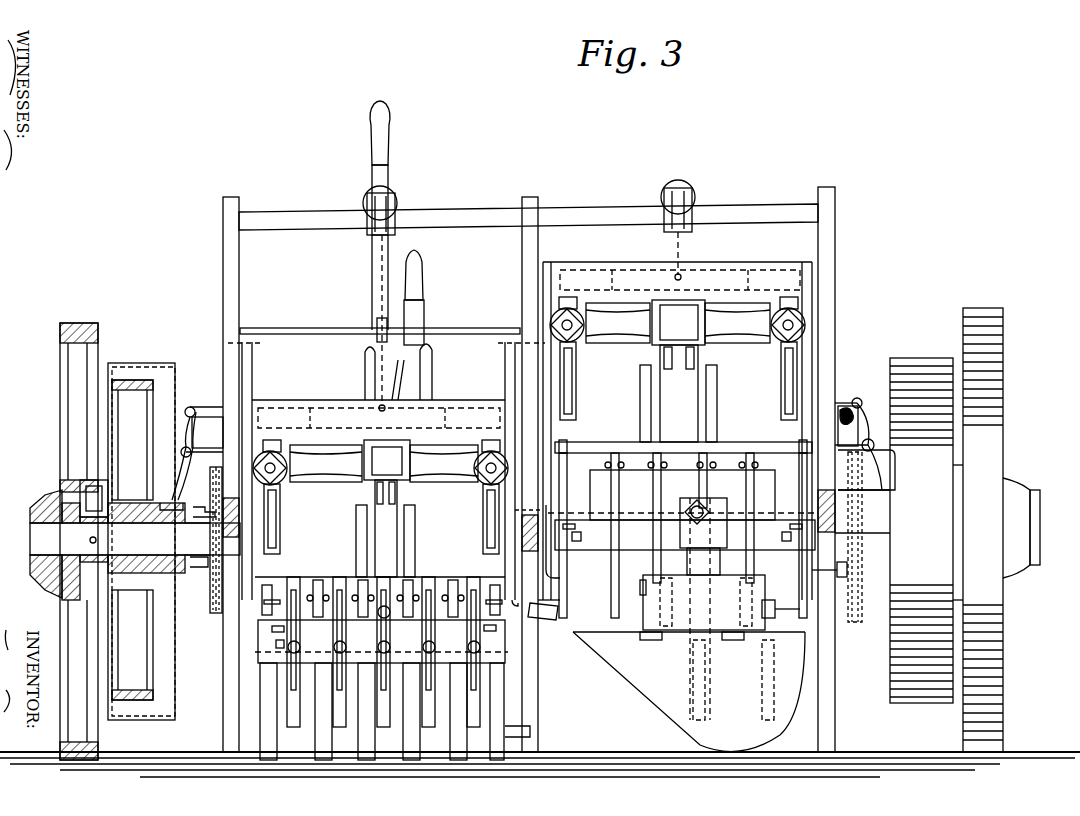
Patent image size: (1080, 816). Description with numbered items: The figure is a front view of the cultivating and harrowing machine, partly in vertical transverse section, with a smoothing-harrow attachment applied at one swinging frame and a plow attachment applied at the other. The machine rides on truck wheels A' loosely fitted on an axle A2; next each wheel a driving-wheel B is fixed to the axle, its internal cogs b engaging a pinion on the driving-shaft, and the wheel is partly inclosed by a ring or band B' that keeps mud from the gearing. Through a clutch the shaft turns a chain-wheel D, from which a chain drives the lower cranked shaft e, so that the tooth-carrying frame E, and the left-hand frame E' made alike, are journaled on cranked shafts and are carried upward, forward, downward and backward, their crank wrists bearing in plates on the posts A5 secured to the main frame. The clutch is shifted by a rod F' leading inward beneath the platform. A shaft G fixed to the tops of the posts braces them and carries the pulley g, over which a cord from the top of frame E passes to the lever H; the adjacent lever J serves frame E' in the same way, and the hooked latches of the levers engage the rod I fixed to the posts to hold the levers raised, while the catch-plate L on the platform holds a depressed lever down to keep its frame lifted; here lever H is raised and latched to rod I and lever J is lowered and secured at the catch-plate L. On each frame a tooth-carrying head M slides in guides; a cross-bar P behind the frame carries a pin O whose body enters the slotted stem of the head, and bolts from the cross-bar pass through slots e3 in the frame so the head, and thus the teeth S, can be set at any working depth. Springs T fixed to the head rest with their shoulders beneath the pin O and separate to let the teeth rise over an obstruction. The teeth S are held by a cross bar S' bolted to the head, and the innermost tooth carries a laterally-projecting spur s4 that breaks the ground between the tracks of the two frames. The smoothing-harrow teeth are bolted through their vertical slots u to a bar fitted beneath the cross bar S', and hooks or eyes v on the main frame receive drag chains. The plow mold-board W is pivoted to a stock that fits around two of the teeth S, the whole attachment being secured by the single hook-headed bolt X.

The truck wheel A' is at (536, 534).
The axle A2 is at (135, 545).
The post A5 is at (848, 250).
The driving-wheel B is at (143, 541).
The ring or band B' is at (535, 542).
The internal cogs or teeth b is at (120, 406).
The chain-wheel D is at (218, 630).
The tooth-carrying frame E is at (537, 485).
The left-hand tooth-carrying frame E' is at (483, 483).
The rod F' is at (871, 503).
The transversely-ranging shaft G is at (328, 214).
The lever H is at (390, 178).
The pulley g is at (398, 205).
The transversely-ranging rod I is at (338, 330).
The lever J is at (424, 306).
The catch-plate L is at (364, 357).
The tooth-carrying head M is at (646, 493).
The pin O is at (534, 390).
The cross-bar P is at (530, 399).
The teeth S is at (533, 600).
The cross bar S' is at (522, 591).
The laterally-projecting tooth or spur s4 is at (530, 730).
The elastic rods or springs T is at (356, 522).
The slots e3 is at (529, 425).
The vertical slots u is at (383, 641).
The hooks or eyes v is at (382, 610).
The plow mold-board W is at (788, 608).
The bolt X is at (703, 609).
The lower cranked shaft e is at (444, 441).